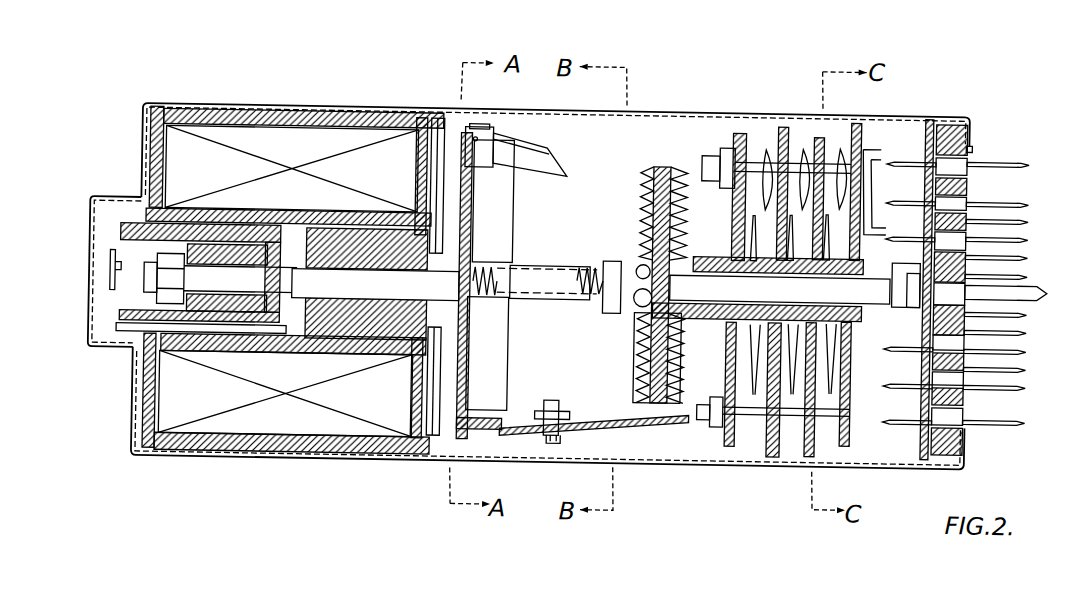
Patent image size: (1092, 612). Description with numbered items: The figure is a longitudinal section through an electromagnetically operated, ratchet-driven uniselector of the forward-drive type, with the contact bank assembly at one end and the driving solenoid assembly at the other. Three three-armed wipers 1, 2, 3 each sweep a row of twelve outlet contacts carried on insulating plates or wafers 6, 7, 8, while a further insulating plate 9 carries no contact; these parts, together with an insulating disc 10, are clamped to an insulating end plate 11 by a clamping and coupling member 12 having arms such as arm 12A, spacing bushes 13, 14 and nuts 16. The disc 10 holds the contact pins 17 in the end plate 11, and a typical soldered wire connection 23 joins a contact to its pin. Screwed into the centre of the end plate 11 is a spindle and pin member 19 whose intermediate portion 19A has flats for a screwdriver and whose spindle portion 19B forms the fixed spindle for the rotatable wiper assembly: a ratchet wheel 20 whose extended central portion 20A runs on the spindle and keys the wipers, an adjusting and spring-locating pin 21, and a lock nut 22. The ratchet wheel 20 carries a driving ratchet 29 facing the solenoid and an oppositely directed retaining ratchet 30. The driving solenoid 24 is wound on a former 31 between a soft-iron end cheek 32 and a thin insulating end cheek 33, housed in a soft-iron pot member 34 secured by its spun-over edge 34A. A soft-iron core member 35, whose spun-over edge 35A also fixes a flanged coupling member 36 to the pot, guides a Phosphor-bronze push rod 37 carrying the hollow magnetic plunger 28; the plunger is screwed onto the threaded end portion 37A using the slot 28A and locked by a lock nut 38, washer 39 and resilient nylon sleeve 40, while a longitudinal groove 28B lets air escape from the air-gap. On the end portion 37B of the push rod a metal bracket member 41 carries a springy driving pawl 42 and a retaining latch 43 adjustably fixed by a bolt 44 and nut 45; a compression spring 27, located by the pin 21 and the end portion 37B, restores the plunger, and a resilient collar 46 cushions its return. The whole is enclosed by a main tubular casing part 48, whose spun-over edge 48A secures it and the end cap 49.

The wiper 1 is at (778, 379).
The wiper 2 is at (810, 393).
The wiper 3 is at (835, 403).
The insulating plate or wafer 6 is at (788, 149).
The insulating plate or wafer 7 is at (818, 131).
The insulating plate or wafer 8 is at (863, 129).
The insulating plate or wafer 9 is at (744, 127).
The insulating disc 10 is at (930, 119).
The insulating end plate 11 is at (971, 132).
The clamping and coupling member 12 is at (729, 203).
The arm 12A is at (576, 259).
The spacing bush 13 is at (756, 152).
The spacing bush 14 is at (873, 414).
The nut 16 is at (713, 417).
The contact pin 17 is at (1028, 151).
The spindle and pin member 19 is at (1033, 281).
The intermediate portion 19A is at (911, 275).
The spindle portion 19B is at (879, 292).
The ratchet wheel 20 is at (655, 384).
The extended central portion 20A is at (857, 338).
The adjusting and spring-locating pin 21 is at (660, 274).
The lock nut 22 is at (643, 254).
The soldered wire connection 23 is at (978, 168).
The driving solenoid 24 is at (268, 145).
The spring 27 is at (513, 256).
The magnetic plunger 28 is at (210, 214).
The slot 28A is at (122, 334).
The longitudinal groove 28B is at (161, 453).
The driving ratchet 29 is at (641, 349).
The retaining ratchet 30 is at (684, 364).
The former 31 is at (389, 120).
The soft-iron end cheek 32 is at (159, 173).
The thin insulating end cheek 33 is at (170, 127).
The soft-iron pot member 34 is at (236, 435).
The spun-over edge 34A is at (143, 117).
The core member 35 is at (385, 398).
The spun-over edge 35A is at (487, 227).
The flanged coupling member 36 is at (490, 407).
The push rod 37 is at (343, 277).
The threaded end portion 37A is at (284, 345).
The end portion 37B is at (527, 305).
The lock nut 38 is at (116, 251).
The washer 39 is at (119, 220).
The resilient nylon sleeve 40 is at (249, 216).
The metal bracket member 41 is at (476, 427).
The springy driving pawl 42 is at (511, 141).
The retaining latch 43 is at (693, 412).
The bolt 44 is at (569, 422).
The nut 45 is at (553, 405).
The resilient collar 46 is at (499, 257).
The main tubular casing part 48 is at (277, 98).
The edge 48A is at (146, 423).
The end cap 49 is at (92, 326).